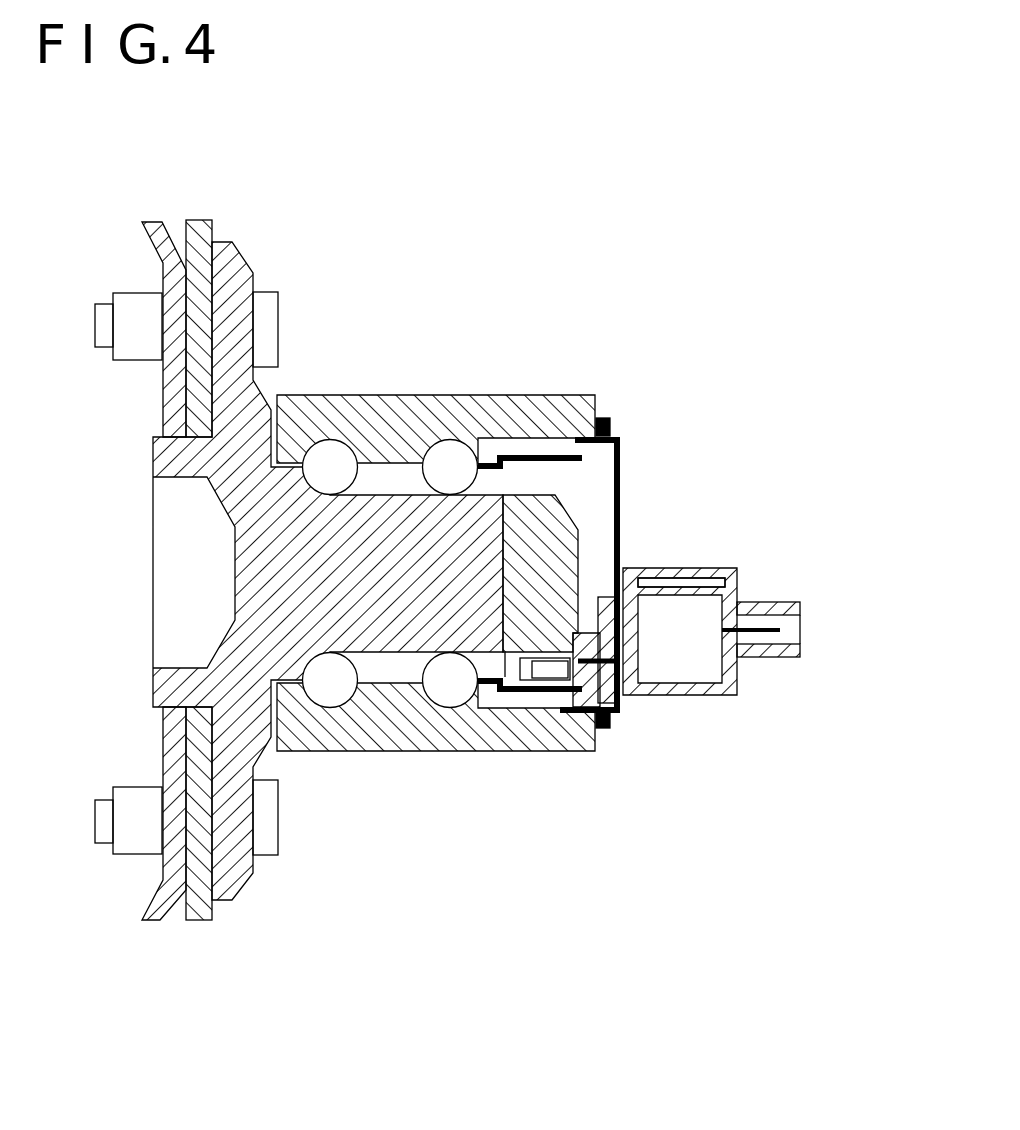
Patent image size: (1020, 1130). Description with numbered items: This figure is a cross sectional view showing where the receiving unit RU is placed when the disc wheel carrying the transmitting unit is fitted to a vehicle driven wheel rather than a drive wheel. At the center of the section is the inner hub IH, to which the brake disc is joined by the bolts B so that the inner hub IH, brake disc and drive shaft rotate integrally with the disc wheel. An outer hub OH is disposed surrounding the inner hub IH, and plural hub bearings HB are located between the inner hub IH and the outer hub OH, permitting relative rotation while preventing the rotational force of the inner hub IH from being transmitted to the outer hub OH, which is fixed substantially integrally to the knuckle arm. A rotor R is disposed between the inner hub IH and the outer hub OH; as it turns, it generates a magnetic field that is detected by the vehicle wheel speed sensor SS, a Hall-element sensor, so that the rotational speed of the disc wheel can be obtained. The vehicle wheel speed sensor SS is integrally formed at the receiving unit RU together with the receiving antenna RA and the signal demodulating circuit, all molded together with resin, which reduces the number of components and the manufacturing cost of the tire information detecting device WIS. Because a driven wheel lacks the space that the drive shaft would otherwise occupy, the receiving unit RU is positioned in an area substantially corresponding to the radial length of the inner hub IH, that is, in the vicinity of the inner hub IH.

The bolts B is at (130, 814).
The inner hub IH is at (265, 533).
The outer hub OH is at (463, 733).
The hub bearings HB is at (330, 683).
The rotor R is at (561, 453).
The vehicle wheel speed sensor SS is at (556, 673).
The receiving antenna RA is at (700, 573).
The receiving unit RU is at (683, 703).
The tire information detecting device WIS is at (774, 642).